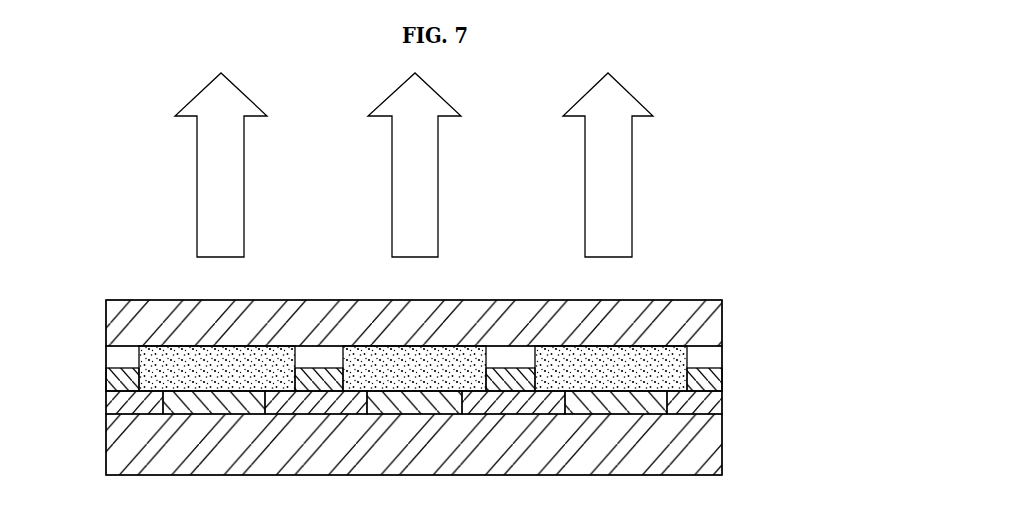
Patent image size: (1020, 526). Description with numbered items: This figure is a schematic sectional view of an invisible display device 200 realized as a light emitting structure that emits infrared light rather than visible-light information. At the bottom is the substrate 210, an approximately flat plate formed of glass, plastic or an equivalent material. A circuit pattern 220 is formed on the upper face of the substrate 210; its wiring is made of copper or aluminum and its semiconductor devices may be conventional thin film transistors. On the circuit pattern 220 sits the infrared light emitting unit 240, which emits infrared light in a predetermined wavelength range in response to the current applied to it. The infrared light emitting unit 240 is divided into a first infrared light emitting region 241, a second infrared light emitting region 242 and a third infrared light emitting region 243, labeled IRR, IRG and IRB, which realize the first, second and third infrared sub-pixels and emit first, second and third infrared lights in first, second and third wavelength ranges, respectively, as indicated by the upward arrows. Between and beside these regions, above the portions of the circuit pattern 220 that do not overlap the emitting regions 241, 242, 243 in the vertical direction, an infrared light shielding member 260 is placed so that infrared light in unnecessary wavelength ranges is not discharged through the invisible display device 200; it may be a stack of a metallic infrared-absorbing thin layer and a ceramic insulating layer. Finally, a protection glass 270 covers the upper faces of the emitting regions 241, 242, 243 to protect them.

The invisible display device 200 is at (720, 243).
The substrate 210 is at (693, 454).
The circuit pattern 220 is at (720, 403).
The infrared light emitting unit 240 is at (697, 353).
The first infrared light emitting region 241 is at (177, 357).
The second infrared light emitting region 242 is at (381, 361).
The third infrared light emitting region 243 is at (641, 362).
The infrared light shielding member 260 is at (110, 374).
The protection glass 270 is at (715, 325).